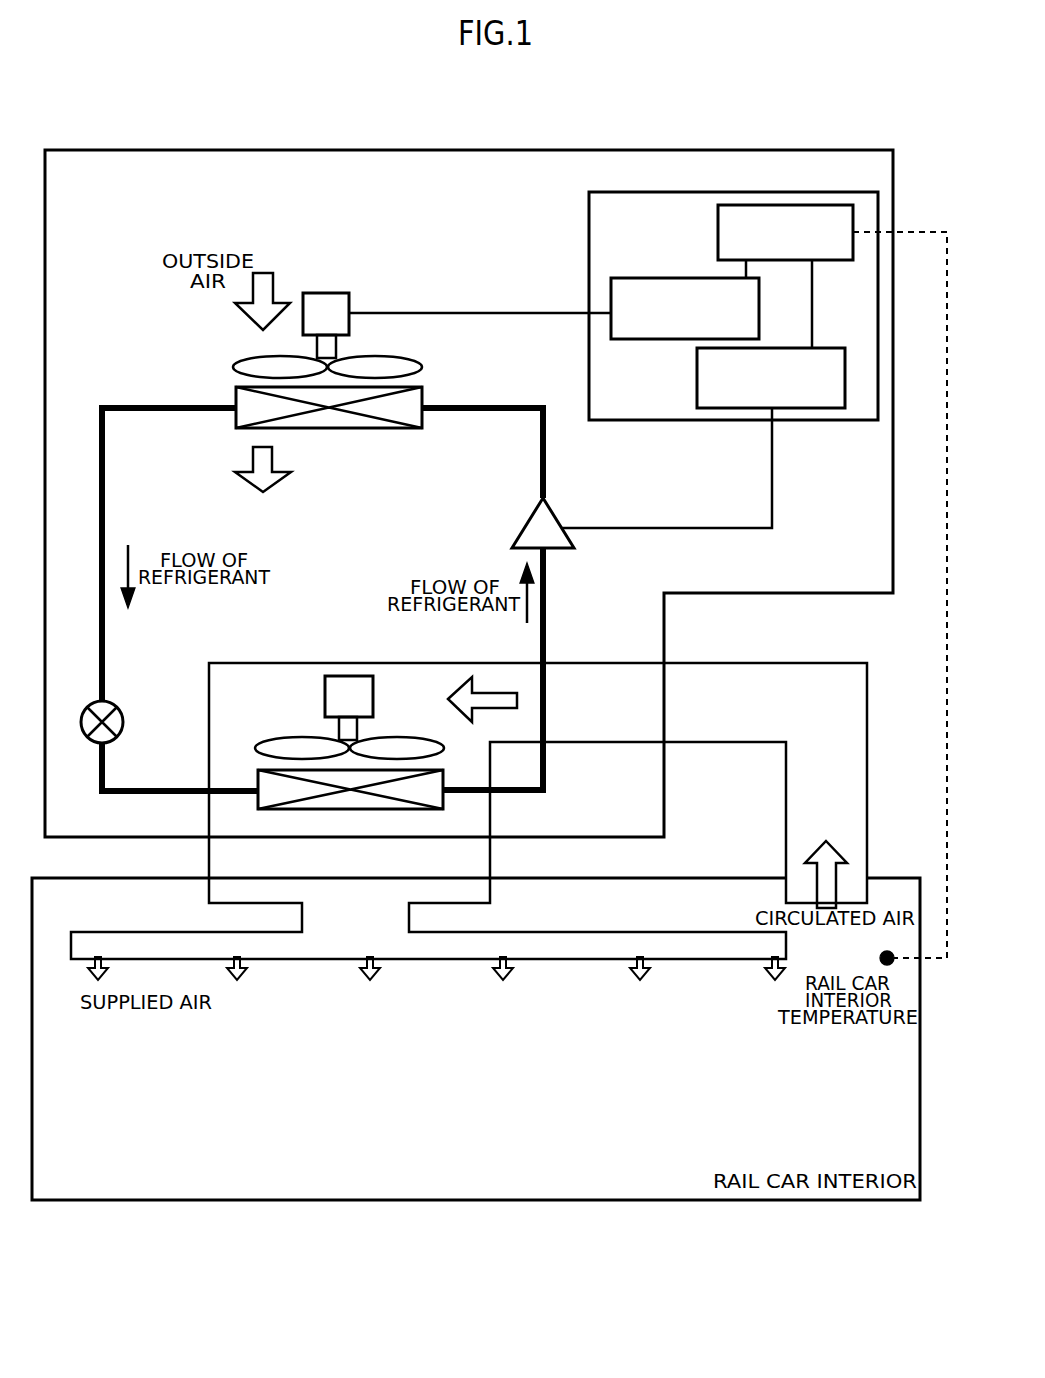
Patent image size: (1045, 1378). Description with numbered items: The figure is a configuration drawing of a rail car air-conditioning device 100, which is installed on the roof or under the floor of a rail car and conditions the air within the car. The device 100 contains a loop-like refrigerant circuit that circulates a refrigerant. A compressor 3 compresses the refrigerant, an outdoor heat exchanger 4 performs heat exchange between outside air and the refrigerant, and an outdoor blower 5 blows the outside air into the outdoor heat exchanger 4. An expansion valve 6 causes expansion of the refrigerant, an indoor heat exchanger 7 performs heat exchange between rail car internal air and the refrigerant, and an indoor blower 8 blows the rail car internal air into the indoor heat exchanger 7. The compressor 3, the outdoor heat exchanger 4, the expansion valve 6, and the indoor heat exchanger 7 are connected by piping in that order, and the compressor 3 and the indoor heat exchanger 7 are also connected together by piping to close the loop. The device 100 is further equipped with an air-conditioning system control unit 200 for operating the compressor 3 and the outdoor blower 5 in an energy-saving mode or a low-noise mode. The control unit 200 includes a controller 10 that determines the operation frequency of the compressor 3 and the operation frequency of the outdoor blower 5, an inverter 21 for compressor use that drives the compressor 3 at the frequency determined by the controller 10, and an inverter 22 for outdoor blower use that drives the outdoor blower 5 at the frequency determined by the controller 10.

The rail car air-conditioning device 100 is at (235, 150).
The air-conditioning system control unit 200 is at (589, 235).
The controller 10 is at (718, 236).
The inverter for outdoor blower use 22 is at (640, 340).
The inverter for compressor use 21 is at (697, 375).
The outdoor blower 5 is at (303, 293).
The outdoor heat exchanger 4 is at (393, 430).
The compressor 3 is at (554, 512).
The expansion valve 6 is at (124, 724).
The indoor blower 8 is at (373, 706).
The indoor heat exchanger 7 is at (443, 800).